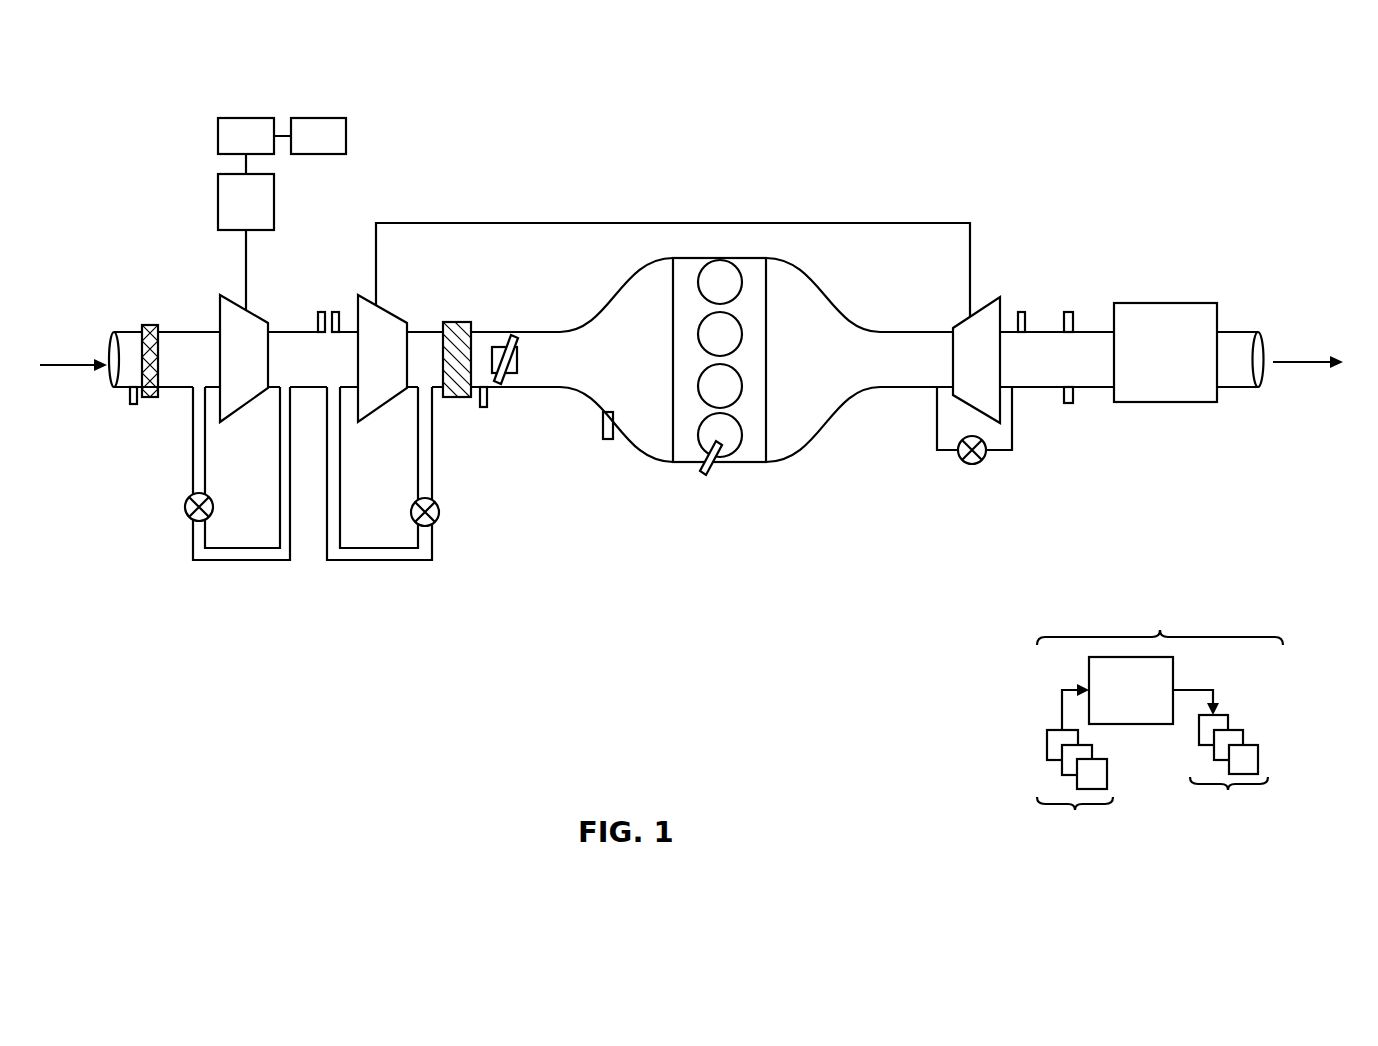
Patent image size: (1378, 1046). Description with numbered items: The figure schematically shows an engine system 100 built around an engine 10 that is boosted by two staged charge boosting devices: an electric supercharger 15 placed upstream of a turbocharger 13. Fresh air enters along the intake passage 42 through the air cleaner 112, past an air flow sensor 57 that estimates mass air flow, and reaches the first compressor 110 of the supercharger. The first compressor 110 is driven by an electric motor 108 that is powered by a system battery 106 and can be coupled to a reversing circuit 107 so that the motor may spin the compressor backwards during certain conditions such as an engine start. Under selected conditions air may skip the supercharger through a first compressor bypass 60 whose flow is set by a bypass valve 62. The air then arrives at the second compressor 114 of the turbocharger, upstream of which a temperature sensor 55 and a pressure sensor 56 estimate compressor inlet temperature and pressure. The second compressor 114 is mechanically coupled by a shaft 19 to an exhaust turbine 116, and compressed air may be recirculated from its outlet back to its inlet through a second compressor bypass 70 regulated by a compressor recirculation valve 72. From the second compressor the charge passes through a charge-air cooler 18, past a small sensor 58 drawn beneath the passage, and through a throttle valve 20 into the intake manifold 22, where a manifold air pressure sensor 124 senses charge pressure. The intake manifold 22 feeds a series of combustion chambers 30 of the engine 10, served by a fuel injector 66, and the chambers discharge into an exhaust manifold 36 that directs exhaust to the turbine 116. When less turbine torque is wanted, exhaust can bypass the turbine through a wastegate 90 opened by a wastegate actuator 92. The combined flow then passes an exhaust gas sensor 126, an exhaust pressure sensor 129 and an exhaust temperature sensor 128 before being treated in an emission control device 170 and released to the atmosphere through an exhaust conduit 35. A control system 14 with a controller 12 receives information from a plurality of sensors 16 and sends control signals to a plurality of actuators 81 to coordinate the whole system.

The engine system 100 is at (1247, 104).
The electric supercharger 15 is at (116, 250).
The air cleaner 112 is at (147, 324).
The intake passage 42 is at (122, 389).
The air flow sensor 57 is at (134, 404).
The first compressor 110 is at (244, 358).
The system battery 106 is at (254, 146).
The reversing circuit 107 is at (318, 136).
The electric motor 108 is at (246, 242).
The first compressor bypass 60 is at (193, 470).
The bypass valve 62 is at (189, 500).
The temperature sensor 55 is at (321, 312).
The pressure sensor 56 is at (336, 312).
The second compressor 114 is at (382, 358).
The shaft 19 is at (871, 226).
The turbocharger 13 is at (426, 259).
The second compressor bypass 70 is at (418, 468).
The compressor recirculation valve 72 is at (413, 505).
The charge-air cooler 18 is at (458, 322).
The throttle inlet pressure sensor 58 is at (483, 407).
The throttle valve 20 is at (517, 370).
The intake manifold 22 is at (616, 360).
The manifold air pressure sensor 124 is at (603, 421).
The engine 10 is at (766, 342).
The combustion chambers 30 is at (737, 270).
The fuel injector 66 is at (713, 462).
The exhaust manifold 36 is at (859, 360).
The exhaust turbine 116 is at (976, 360).
The wastegate 90 is at (937, 432).
The wastegate actuator 92 is at (972, 464).
The exhaust conduit 35 is at (1240, 332).
The exhaust gas sensor 126 is at (1021, 312).
The exhaust pressure sensor 129 is at (1068, 312).
The exhaust temperature sensor 128 is at (1068, 403).
The emission control device 170 is at (1150, 304).
The control system 14 is at (1160, 616).
The controller 12 is at (1140, 693).
The sensors 16 is at (1075, 789).
The actuators 81 is at (1230, 773).